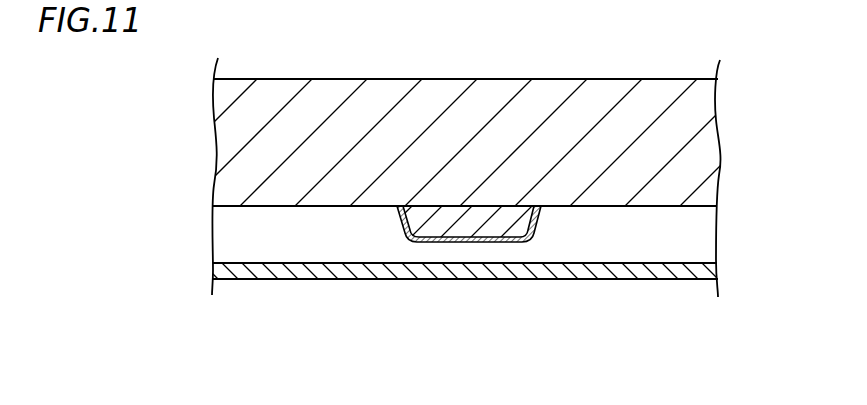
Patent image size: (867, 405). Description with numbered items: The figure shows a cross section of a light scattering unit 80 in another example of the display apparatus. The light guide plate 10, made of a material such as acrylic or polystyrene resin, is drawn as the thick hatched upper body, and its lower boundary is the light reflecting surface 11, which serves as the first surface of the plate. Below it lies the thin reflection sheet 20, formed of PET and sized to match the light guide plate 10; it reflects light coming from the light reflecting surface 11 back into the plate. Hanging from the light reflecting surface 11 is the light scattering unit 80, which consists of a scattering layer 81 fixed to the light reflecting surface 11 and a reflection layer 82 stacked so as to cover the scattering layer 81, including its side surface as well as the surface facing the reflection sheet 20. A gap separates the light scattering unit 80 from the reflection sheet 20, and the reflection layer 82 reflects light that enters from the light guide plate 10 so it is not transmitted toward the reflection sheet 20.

The light guide plate 10 is at (495, 88).
The light reflecting surface 11 is at (603, 208).
The reflection sheet 20 is at (310, 272).
The light scattering unit 80 is at (471, 297).
The scattering layer 81 is at (490, 232).
The reflection layer 82 is at (447, 245).